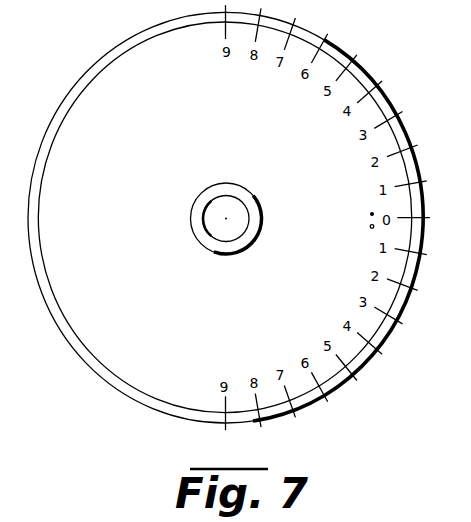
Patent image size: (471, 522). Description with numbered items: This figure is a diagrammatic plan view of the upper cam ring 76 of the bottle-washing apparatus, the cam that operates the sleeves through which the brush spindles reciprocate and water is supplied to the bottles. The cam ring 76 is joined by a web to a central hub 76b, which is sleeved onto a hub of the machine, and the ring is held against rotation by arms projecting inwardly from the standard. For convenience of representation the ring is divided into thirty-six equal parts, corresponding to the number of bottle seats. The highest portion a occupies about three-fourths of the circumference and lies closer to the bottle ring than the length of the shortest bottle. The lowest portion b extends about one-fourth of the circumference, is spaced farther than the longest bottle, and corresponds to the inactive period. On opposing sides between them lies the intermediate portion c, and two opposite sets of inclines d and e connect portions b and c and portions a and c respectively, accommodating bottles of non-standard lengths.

The cam ring 76 is at (38, 263).
The hub 76b is at (249, 231).
The highest portion of the cam a is at (139, 275).
The lowest portion of the cam b is at (443, 222).
The intermediate portion of the cam c is at (332, 219).
The inclines d is at (376, 218).
The inclines e is at (278, 221).